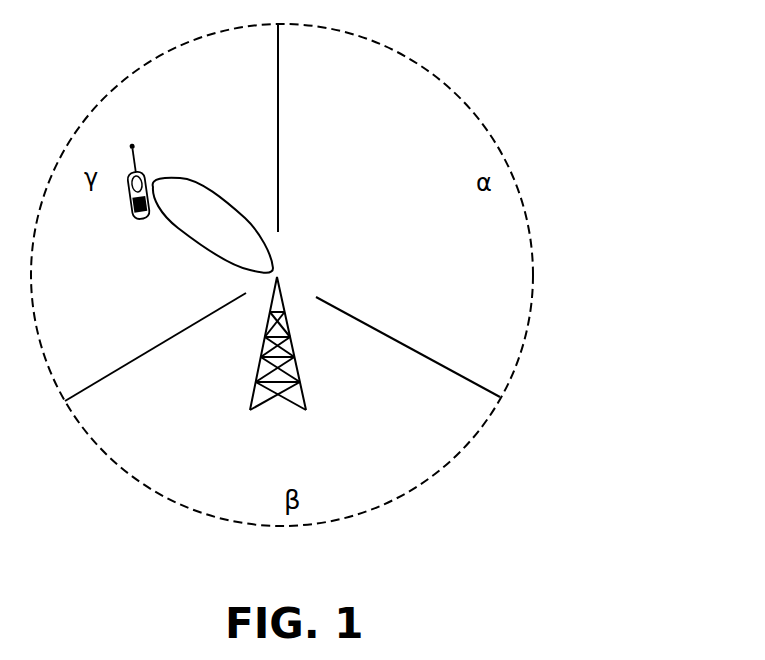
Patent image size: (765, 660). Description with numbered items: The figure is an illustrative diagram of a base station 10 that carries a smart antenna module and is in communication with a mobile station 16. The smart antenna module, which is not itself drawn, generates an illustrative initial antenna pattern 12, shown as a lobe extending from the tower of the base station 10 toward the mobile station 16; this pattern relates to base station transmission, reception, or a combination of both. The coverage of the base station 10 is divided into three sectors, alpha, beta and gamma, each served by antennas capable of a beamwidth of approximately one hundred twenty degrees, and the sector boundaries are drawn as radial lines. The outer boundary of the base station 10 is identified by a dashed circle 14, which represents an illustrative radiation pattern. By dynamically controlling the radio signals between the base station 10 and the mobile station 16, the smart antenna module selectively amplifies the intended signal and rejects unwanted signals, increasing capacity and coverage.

The base station 10 is at (288, 310).
The initial antenna pattern 12 is at (242, 212).
The circle 14 is at (533, 240).
The mobile station 16 is at (151, 186).